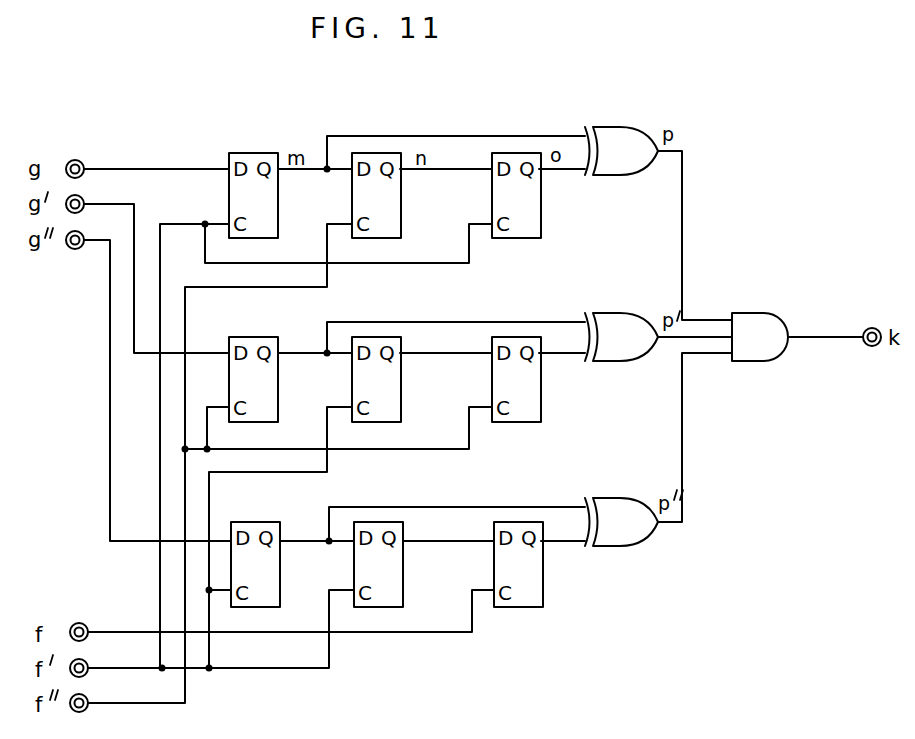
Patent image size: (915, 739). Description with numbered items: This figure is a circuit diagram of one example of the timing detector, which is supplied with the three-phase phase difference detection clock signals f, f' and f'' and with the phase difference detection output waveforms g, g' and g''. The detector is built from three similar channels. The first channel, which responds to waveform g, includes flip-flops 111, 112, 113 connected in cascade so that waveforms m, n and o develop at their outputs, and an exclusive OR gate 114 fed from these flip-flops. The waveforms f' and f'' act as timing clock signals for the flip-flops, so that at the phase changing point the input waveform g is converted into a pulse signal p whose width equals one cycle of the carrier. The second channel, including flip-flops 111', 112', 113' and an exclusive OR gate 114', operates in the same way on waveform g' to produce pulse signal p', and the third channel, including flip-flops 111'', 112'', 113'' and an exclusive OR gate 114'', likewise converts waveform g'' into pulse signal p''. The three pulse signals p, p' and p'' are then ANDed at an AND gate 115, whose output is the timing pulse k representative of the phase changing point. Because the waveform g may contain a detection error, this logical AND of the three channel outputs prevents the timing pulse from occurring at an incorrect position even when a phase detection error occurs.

The flip-flop 111 is at (253, 173).
The flip-flop 112 is at (400, 203).
The flip-flop 113 is at (541, 203).
The exclusive OR gate 114 is at (621, 128).
The AND gate 115 is at (763, 313).
The flip-flop 111' is at (253, 361).
The flip-flop 112' is at (405, 387).
The flip-flop 113' is at (546, 387).
The exclusive OR gate 114' is at (621, 315).
The flip-flop 111'' is at (255, 546).
The flip-flop 112'' is at (410, 572).
The flip-flop 113'' is at (552, 570).
The exclusive OR gate 114'' is at (622, 500).